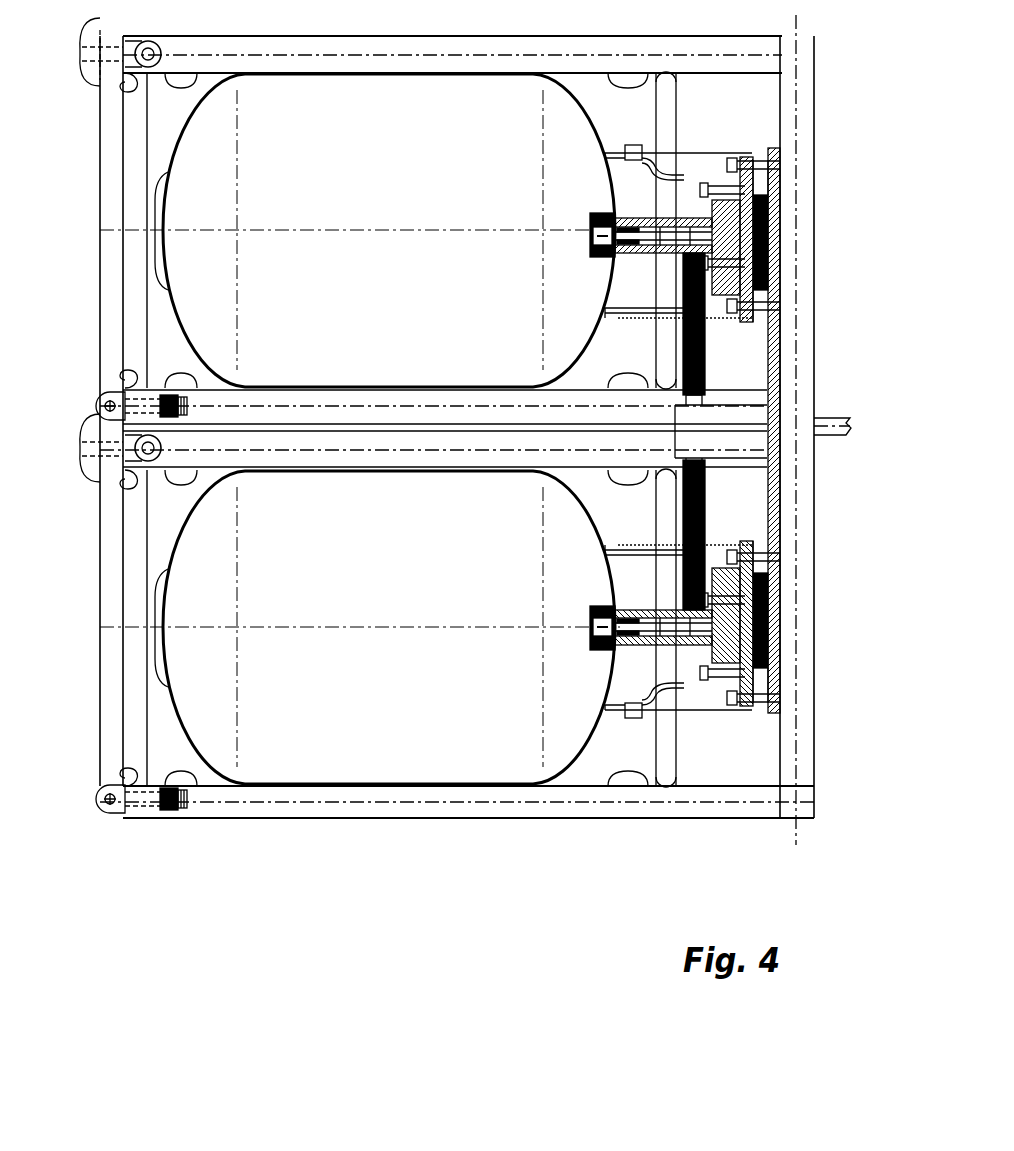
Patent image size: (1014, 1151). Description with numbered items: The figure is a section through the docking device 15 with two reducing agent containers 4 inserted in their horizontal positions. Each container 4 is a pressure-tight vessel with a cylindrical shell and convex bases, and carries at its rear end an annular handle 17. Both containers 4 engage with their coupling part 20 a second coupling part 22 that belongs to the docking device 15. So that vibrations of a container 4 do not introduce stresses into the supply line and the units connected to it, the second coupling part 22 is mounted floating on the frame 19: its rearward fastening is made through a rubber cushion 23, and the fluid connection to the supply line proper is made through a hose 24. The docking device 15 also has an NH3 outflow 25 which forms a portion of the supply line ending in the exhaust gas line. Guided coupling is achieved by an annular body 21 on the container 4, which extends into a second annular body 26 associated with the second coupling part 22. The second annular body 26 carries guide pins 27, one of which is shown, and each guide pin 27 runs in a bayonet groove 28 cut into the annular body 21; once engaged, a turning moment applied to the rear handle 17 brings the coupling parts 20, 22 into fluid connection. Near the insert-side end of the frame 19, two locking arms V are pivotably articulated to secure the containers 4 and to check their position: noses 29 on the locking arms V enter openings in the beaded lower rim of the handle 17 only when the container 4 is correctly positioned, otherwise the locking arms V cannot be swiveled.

The reducing agent container 4 is at (419, 277).
The docking device 15 is at (553, 855).
The handle 17 is at (168, 745).
The frame 19 is at (722, 822).
The coupling part 20 is at (605, 650).
The annular body 21 is at (652, 598).
The second coupling part 22 is at (684, 656).
The rubber cushion 23 is at (772, 612).
The hose 24 is at (707, 516).
The NH3 outflow 25 is at (848, 420).
The second annular body 26 is at (622, 550).
The guide pin 27 is at (622, 715).
The bayonet groove 28 is at (635, 692).
The nose 29 is at (132, 480).
The locking arm V is at (98, 232).